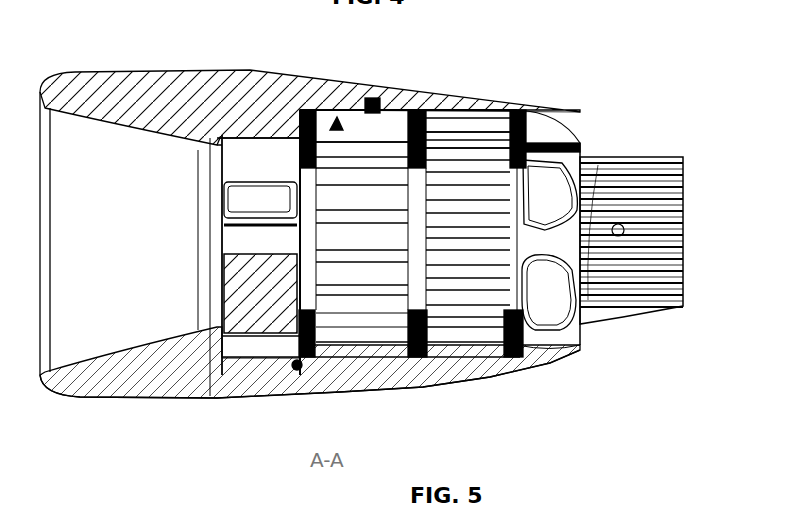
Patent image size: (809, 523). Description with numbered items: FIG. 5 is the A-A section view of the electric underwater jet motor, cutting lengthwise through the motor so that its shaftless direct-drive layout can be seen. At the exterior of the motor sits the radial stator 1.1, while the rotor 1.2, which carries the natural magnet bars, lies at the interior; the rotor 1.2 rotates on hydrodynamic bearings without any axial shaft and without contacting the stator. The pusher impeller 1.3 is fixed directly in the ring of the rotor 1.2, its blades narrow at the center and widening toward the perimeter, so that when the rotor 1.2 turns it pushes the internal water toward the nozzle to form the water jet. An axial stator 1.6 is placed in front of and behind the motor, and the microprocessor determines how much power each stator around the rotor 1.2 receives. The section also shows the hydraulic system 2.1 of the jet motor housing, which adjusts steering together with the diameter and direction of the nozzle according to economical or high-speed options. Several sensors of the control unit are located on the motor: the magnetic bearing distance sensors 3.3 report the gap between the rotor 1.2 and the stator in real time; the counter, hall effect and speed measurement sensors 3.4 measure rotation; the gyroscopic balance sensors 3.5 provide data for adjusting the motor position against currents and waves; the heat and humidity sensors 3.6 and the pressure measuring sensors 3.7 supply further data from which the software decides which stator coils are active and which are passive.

The radial stator 1.1 is at (308, 133).
The rotor 1.2 is at (445, 333).
The pusher impeller 1.3 is at (362, 263).
The axial stator 1.6 is at (340, 132).
The hydraulic system that adjusts steering and the diameter and the direction of the 2.1 is at (302, 130).
The magnetic bearing (distance) sensors 3.3 is at (308, 128).
The counter, hall effect and speed measurement sensors 3.4 is at (375, 108).
The gyroscopic balance sensors 3.5 is at (335, 125).
The heat and humidity sensors 3.6 is at (297, 365).
The pressure measuring sensors 3.7 is at (595, 157).